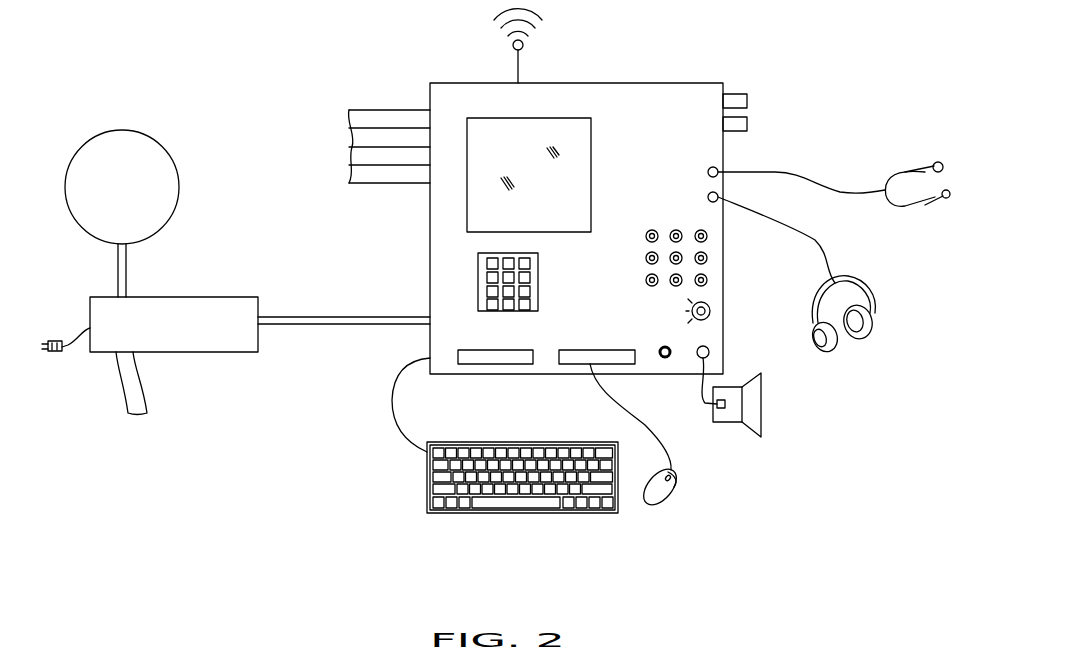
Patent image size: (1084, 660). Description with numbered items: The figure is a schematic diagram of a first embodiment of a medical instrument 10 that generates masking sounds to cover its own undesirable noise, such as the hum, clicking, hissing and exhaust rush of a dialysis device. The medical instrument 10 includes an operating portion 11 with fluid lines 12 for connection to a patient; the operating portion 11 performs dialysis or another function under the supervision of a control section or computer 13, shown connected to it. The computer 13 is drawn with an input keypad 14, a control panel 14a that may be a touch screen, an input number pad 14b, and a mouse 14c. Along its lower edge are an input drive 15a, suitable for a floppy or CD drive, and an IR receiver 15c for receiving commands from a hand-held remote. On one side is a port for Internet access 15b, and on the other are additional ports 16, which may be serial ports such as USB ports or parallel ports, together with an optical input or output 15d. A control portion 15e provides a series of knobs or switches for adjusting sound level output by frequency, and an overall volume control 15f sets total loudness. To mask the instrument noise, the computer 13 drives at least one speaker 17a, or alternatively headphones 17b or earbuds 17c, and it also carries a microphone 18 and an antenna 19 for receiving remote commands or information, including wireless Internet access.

The medical instrument 10 is at (191, 79).
The operating portion 11 is at (197, 297).
The fluid lines 12 is at (148, 395).
The control section or computer 13 is at (430, 338).
The input keypad 14 is at (490, 513).
The control panel 14a is at (467, 222).
The input number pad 14b is at (478, 272).
The mouse 14c is at (677, 494).
The input drive 15a is at (489, 364).
The port for Internet access 15b is at (352, 186).
The IR receiver 15c is at (615, 364).
The optical input or output 15d is at (744, 94).
The control portion 15e is at (708, 270).
The overall volume control 15f is at (711, 311).
The ports 16 is at (377, 80).
The speaker 17a is at (733, 422).
The headphones 17b is at (838, 248).
The earbuds 17c is at (773, 172).
The microphone 18 is at (666, 358).
The antenna 19 is at (524, 62).